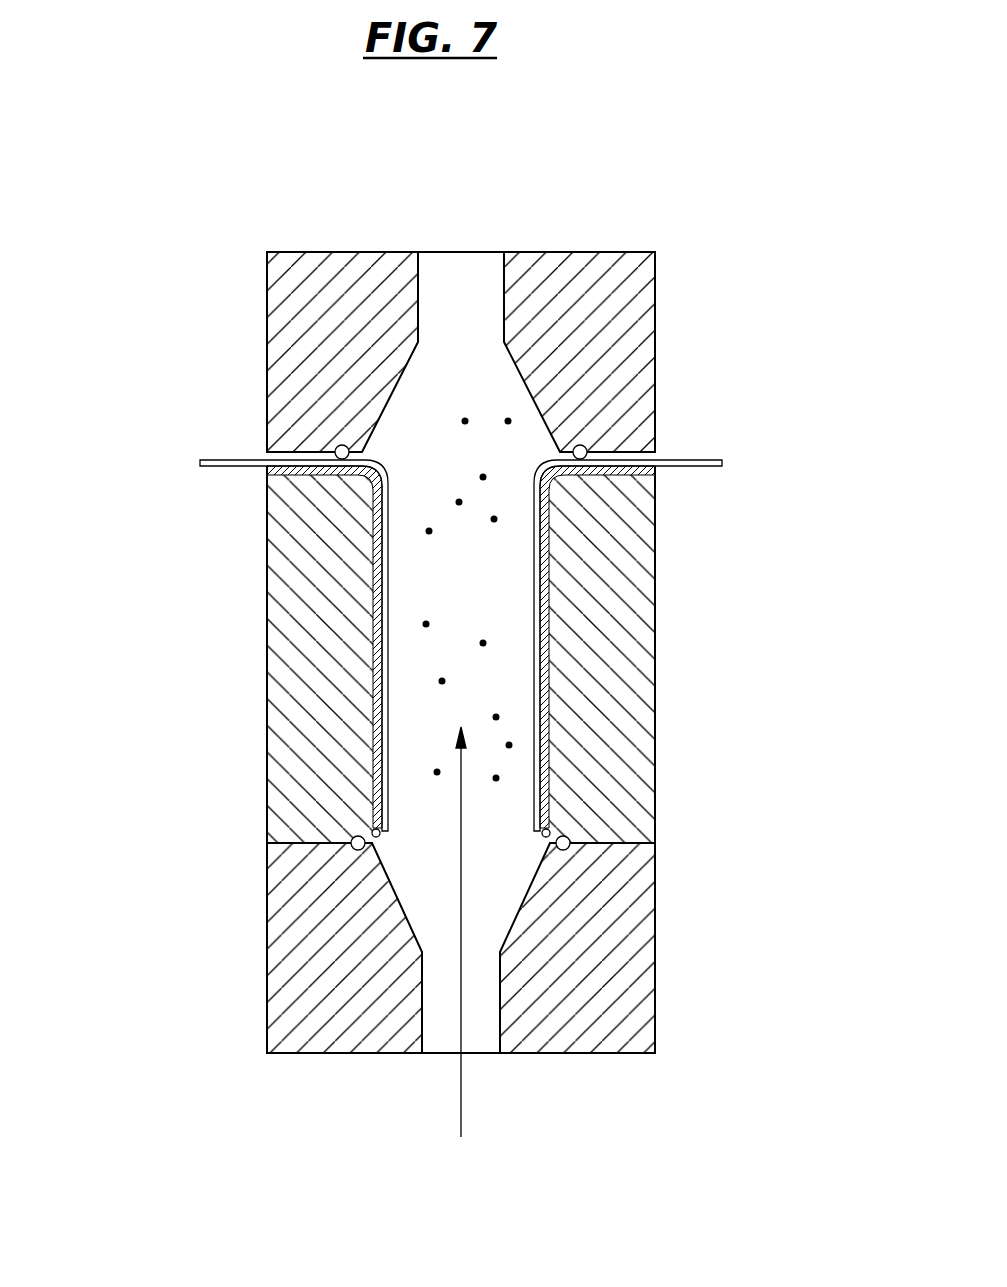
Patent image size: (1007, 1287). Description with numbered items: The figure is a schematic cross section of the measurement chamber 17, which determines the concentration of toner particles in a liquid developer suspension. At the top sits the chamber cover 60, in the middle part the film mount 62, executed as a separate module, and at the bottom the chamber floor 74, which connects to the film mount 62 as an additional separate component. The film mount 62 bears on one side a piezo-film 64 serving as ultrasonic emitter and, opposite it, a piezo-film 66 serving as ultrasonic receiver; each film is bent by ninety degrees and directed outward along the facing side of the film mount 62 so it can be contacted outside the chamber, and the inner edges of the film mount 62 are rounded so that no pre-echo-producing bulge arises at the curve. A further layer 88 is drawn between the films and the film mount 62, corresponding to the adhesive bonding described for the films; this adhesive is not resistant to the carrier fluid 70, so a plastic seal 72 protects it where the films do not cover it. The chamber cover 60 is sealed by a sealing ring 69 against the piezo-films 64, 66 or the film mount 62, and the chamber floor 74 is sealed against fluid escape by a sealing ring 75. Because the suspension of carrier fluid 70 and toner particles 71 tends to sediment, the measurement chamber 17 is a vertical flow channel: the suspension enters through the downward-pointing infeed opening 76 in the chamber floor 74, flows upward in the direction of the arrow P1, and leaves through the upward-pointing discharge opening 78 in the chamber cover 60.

The measurement chamber 17 is at (162, 524).
The chamber cover 60 is at (365, 252).
The film mount 62 is at (267, 650).
The piezo-film 64 is at (683, 460).
The piezo-film 66 is at (230, 460).
The sealing ring 69 is at (342, 445).
The carrier fluid 70 is at (483, 607).
The toner particles 71 is at (483, 643).
The seal 72 is at (372, 830).
The chamber floor 74 is at (267, 948).
The sealing ring 75 is at (352, 840).
The infeed opening 76 is at (480, 1055).
The discharge opening 78 is at (465, 252).
The liner 88 is at (550, 528).
The arrow P1 is at (460, 1075).